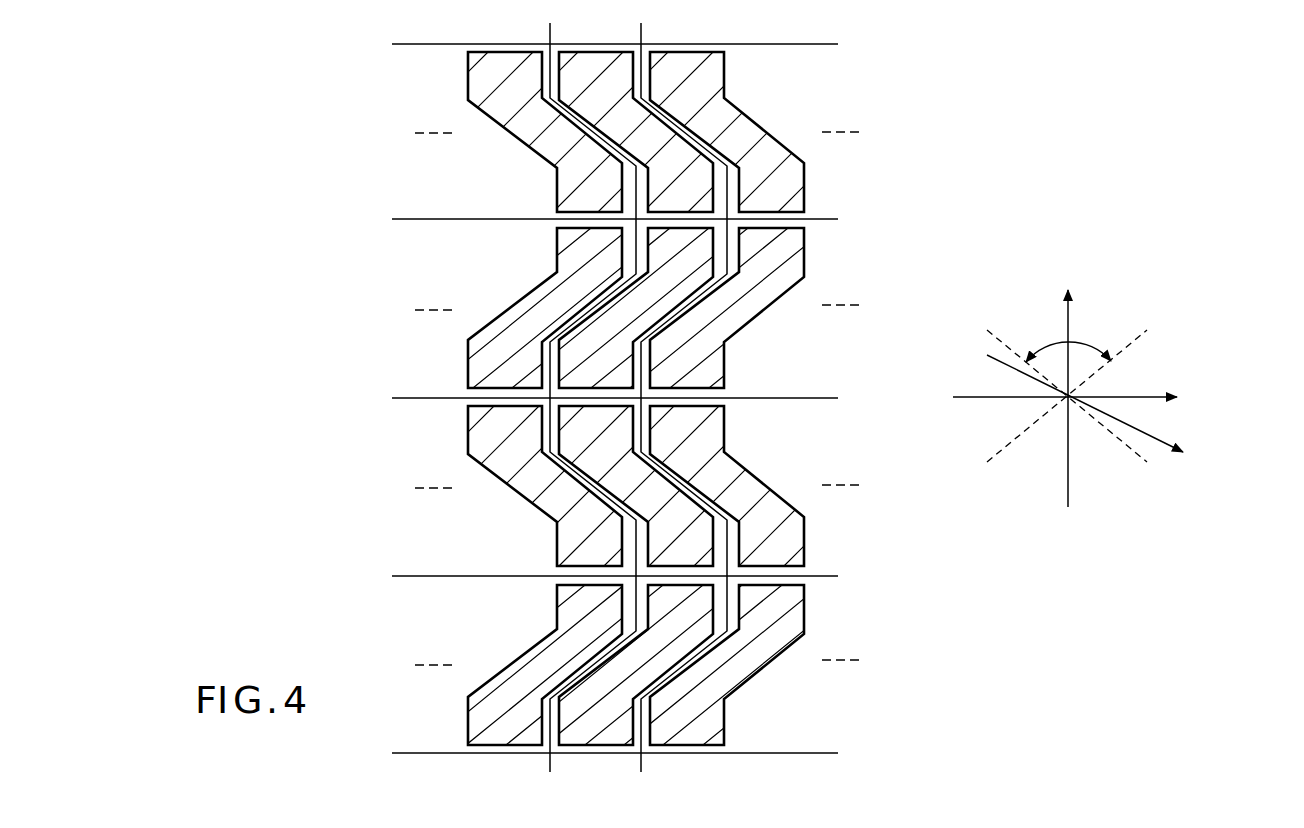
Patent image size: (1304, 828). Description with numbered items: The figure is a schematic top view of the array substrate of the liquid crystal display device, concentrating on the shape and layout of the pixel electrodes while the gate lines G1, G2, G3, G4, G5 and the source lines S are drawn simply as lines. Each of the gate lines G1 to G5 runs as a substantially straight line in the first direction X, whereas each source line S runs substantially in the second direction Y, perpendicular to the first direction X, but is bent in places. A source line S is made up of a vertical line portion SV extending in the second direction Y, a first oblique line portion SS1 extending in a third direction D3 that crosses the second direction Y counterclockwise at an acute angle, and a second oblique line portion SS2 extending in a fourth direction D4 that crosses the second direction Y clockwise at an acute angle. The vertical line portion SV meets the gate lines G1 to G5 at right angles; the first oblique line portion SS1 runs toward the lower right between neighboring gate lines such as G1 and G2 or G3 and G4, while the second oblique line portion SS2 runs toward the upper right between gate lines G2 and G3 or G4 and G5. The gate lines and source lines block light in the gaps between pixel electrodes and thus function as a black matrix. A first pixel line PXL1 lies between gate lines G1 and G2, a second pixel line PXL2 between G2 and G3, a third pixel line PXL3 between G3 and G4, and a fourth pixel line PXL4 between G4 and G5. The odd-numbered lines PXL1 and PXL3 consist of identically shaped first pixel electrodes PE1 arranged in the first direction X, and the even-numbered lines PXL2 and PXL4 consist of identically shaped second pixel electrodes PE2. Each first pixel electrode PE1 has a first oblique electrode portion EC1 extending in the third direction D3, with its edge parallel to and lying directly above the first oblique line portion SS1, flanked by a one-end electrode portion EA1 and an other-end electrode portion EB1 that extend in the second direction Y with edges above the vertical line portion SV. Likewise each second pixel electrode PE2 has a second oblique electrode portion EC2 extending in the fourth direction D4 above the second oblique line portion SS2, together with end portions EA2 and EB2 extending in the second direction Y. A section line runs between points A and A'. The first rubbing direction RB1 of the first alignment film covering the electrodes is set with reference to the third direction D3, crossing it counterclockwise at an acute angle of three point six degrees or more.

The gate line G1 is at (822, 43).
The gate line G2 is at (830, 219).
The gate line G3 is at (822, 398).
The gate line G4 is at (830, 576).
The gate line G5 is at (822, 753).
The first pixel electrode PE1 is at (466, 77).
The second pixel electrode PE2 is at (555, 247).
The vertical line portion SV is at (550, 33).
The source line S is at (550, 768).
The one-end electrode portion EA1 is at (716, 62).
The other-end electrode portion EB1 is at (792, 202).
The first oblique electrode portion EC1 is at (752, 134).
The one-end electrode portion EA2 is at (720, 352).
The other-end electrode portion EB2 is at (793, 247).
The second oblique electrode portion EC2 is at (760, 302).
The first oblique line portion SS1 is at (570, 128).
The second oblique line portion SS2 is at (578, 312).
The first pixel line PXL1 is at (440, 160).
The second pixel line PXL2 is at (440, 291).
The third pixel line PXL3 is at (440, 515).
The fourth pixel line PXL4 is at (440, 645).
The cross-section line start A is at (668, 135).
The cross-section line end A' is at (712, 120).
The first direction X is at (1075, 397).
The second direction Y is at (1067, 382).
The third direction D3 is at (1001, 341).
The fourth direction D4 is at (1117, 357).
The first rubbing direction RB1 is at (1160, 443).